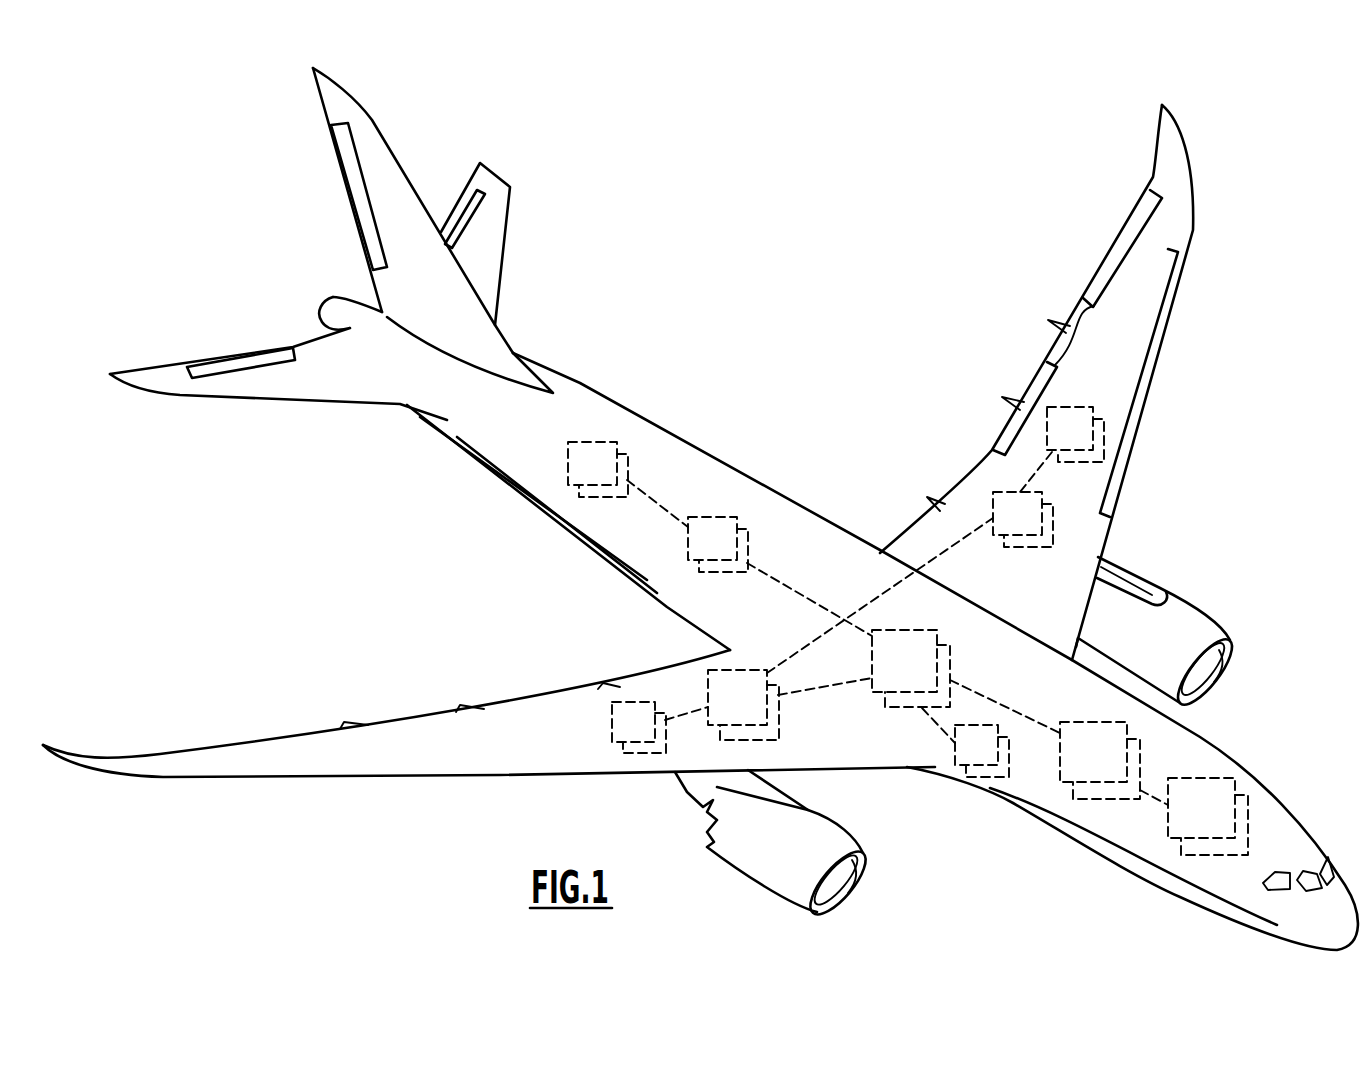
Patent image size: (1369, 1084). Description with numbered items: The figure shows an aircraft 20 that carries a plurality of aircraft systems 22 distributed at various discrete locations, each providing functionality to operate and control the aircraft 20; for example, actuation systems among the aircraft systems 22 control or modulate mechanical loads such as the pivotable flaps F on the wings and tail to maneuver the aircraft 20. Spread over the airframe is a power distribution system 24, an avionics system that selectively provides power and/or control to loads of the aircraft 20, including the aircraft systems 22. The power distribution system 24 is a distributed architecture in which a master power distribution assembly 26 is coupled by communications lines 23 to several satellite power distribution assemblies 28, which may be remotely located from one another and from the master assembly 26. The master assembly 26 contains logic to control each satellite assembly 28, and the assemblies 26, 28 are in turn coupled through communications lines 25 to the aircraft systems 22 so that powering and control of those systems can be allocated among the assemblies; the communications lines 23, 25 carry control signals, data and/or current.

The aircraft 20 is at (700, 498).
The aircraft systems 22 is at (597, 497).
The communications lines 23 is at (797, 588).
The power distribution system 24 is at (1218, 477).
The communications lines 25 is at (653, 498).
The master power distribution assembly 26 is at (937, 632).
The satellite power distribution assembly 28 is at (717, 517).
The pivotable flaps F is at (345, 187).